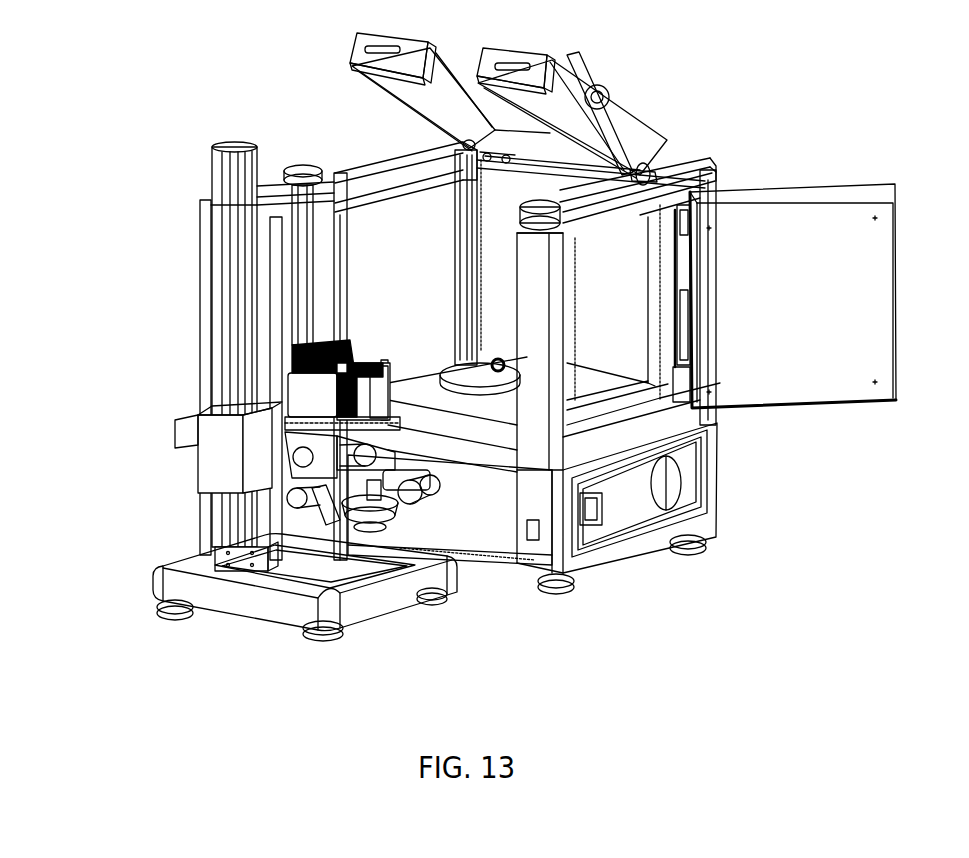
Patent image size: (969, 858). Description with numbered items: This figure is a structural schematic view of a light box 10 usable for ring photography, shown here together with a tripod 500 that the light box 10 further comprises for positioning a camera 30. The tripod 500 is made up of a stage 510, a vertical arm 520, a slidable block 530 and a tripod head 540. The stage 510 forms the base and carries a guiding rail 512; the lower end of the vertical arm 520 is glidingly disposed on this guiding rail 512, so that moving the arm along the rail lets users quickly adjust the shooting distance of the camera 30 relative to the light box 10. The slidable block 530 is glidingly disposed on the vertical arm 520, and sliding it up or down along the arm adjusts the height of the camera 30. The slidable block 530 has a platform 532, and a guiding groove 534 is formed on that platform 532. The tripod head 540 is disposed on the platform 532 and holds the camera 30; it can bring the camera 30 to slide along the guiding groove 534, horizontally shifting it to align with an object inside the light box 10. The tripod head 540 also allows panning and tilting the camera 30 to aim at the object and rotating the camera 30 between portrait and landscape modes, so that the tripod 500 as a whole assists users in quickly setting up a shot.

The light box 10 is at (851, 629).
The camera 30 is at (315, 398).
The tripod 500 is at (108, 598).
The stage 510 is at (207, 602).
The guiding rail 512 is at (207, 557).
The vertical arm 520 is at (213, 162).
The slidable block 530 is at (205, 463).
The platform 532 is at (282, 502).
The guiding groove 534 is at (343, 505).
The tripod head 540 is at (407, 505).